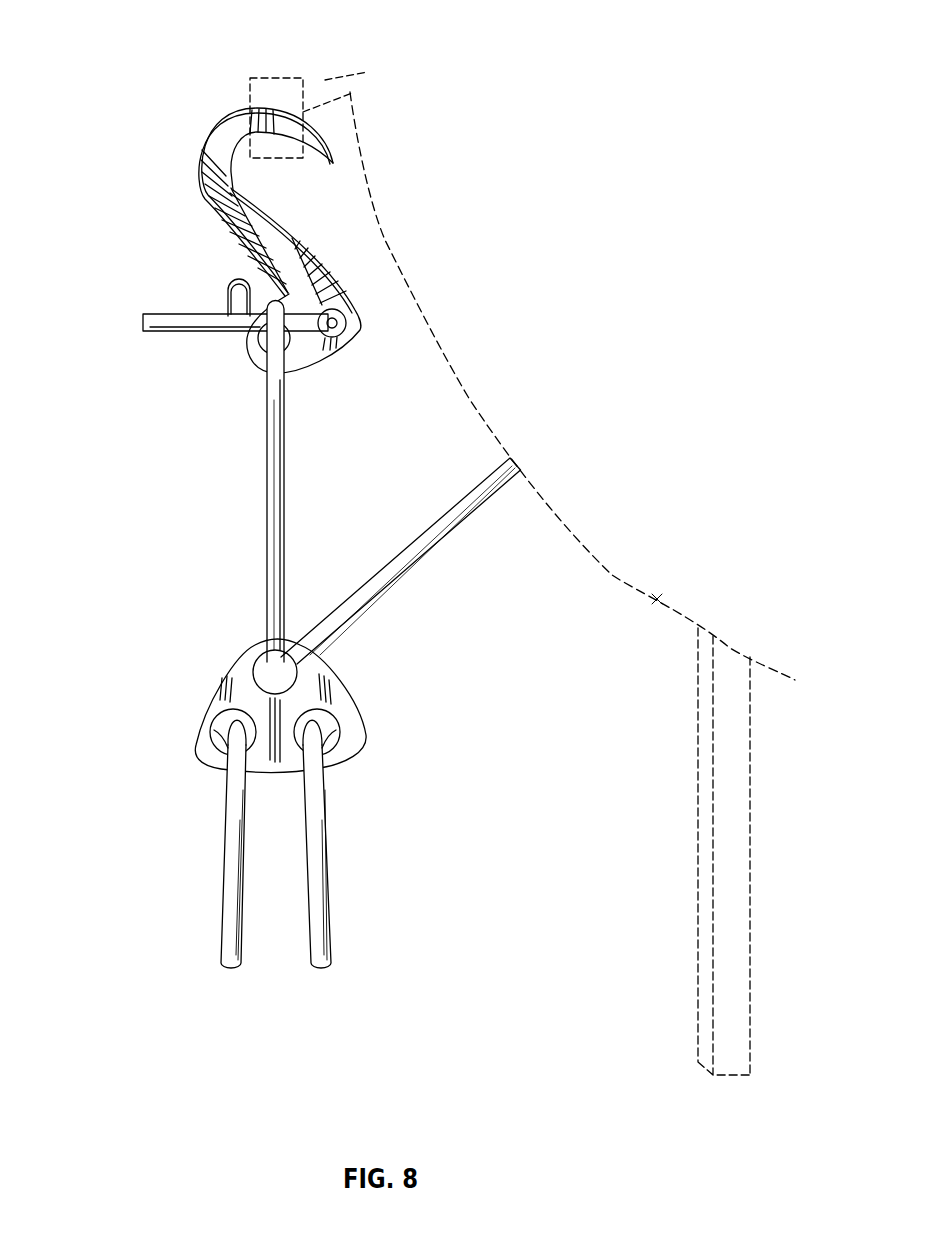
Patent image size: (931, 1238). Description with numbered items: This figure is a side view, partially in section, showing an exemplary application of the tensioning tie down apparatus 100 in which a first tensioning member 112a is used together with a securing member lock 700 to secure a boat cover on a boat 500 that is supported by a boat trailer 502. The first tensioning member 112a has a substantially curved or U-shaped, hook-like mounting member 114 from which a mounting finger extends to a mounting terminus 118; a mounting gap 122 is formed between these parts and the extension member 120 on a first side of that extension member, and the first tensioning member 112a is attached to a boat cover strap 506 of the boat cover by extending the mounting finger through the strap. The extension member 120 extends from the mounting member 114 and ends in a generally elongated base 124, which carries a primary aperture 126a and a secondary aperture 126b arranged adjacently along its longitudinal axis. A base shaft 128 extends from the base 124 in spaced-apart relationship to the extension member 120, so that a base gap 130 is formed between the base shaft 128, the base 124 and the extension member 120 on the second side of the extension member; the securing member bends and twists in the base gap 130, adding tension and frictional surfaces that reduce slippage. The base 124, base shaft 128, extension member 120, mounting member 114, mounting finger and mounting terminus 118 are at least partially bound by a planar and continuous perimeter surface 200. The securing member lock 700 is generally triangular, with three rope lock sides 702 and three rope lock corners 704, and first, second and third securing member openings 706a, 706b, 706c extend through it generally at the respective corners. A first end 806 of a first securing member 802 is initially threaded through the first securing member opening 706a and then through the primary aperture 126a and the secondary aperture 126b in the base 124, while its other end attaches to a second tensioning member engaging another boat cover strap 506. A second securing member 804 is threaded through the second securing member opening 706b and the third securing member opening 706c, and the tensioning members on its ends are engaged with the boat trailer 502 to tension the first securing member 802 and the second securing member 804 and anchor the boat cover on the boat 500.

The tensioning tie down apparatus 100 is at (176, 38).
The first tensioning member 112a is at (195, 155).
The mounting member 114 is at (237, 123).
The mounting terminus 118 is at (323, 160).
The mounting gap 122 is at (286, 181).
The base gap 130 is at (238, 262).
The perimeter surface 200 is at (202, 205).
The boat cover strap 506 is at (354, 97).
The extension member 120 is at (333, 288).
The base 124 is at (303, 360).
The base shaft 128 is at (232, 294).
The primary aperture 126a is at (258, 340).
The secondary aperture 126b is at (340, 327).
The first end 806 is at (143, 323).
The first securing member 802 is at (265, 507).
The boat 500 is at (660, 598).
The boat trailer 502 is at (698, 870).
The securing member lock 700 is at (196, 714).
The rope lock side 702 is at (225, 682).
The rope lock corner 704 is at (200, 760).
The first securing member opening 706a is at (262, 662).
The second securing member opening 706b is at (215, 732).
The third securing member opening 706c is at (338, 735).
The second securing member 804 is at (222, 912).